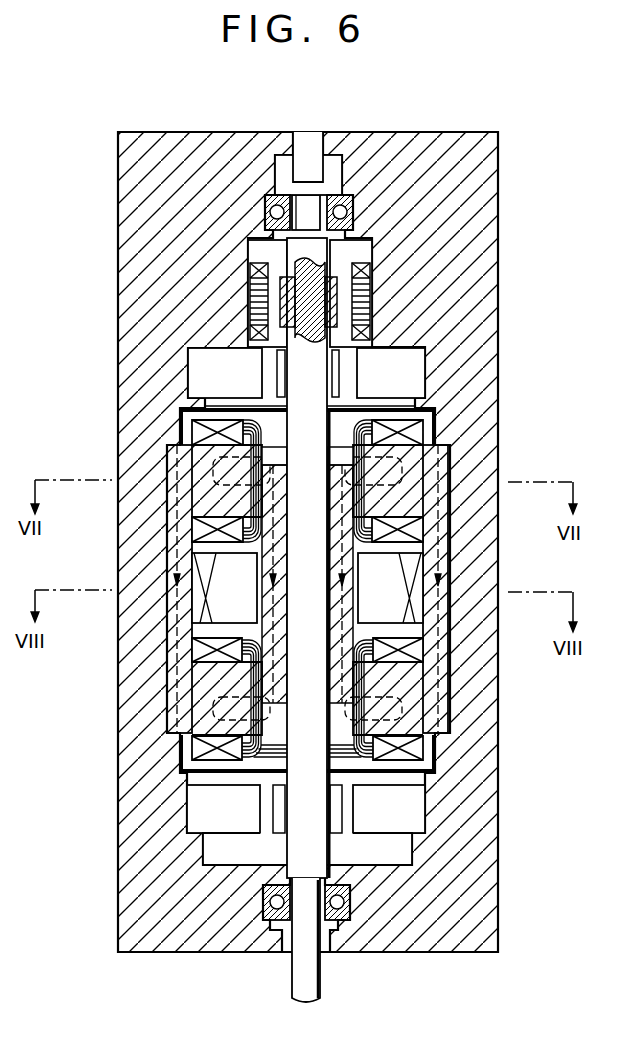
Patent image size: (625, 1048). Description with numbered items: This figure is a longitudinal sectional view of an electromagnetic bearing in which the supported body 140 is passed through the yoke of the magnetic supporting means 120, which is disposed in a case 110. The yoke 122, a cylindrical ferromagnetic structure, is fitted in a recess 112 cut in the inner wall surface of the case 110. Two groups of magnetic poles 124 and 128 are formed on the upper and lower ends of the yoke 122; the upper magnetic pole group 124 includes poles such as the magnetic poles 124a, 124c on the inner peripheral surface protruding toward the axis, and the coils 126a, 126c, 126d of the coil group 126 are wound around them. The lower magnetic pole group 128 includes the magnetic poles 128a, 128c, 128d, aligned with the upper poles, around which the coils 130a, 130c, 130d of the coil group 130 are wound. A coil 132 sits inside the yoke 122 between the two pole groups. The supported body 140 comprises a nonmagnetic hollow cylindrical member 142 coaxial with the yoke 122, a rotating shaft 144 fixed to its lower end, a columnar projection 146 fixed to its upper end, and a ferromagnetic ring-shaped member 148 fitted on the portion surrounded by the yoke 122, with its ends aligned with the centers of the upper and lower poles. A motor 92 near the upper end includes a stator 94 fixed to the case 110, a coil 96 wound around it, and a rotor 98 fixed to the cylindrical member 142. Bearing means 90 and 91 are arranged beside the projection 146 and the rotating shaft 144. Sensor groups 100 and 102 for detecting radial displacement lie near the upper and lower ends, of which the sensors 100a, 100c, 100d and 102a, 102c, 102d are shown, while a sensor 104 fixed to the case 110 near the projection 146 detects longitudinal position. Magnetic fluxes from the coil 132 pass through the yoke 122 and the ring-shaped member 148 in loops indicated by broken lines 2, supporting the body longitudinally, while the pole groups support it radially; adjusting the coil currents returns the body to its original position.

The broken lines 2 is at (326, 528).
The bearing means 90 is at (267, 196).
The bearing means 91 is at (270, 930).
The motor 92 is at (372, 285).
The stator 94 is at (364, 292).
The coil 96 is at (250, 290).
The rotor 98 is at (268, 290).
The sensor group 100 is at (371, 353).
The sensor 100a is at (208, 365).
The sensor 100c is at (415, 362).
The sensor 100d is at (337, 367).
The sensor group 102 is at (312, 822).
The sensor 102a is at (193, 823).
The sensor 102c is at (417, 817).
The sensor 102d is at (280, 822).
The sensor 104 is at (313, 135).
The case 110 is at (486, 670).
The recess 112 is at (447, 528).
The magnetic supporting means 120 is at (311, 589).
The yoke 122 is at (177, 623).
The magnetic pole group 124 is at (192, 433).
The magnetic pole 124a is at (190, 468).
The magnetic pole 124c is at (425, 462).
The coil group 126 is at (313, 460).
The coil 126a is at (180, 430).
The coil 126c is at (437, 428).
The coil 126d is at (428, 408).
The magnetic pole group 128 is at (246, 700).
The magnetic pole 128a is at (232, 685).
The magnetic pole 128c is at (420, 705).
The magnetic pole 128d is at (186, 737).
The coil group 130 is at (312, 771).
The coil 130a is at (183, 770).
The coil 130c is at (420, 754).
The coil 130d is at (253, 775).
The coil 132 is at (208, 594).
The supported body 140 is at (437, 826).
The hollow cylindrical member 142 is at (327, 852).
The rotating shaft 144 is at (316, 975).
The columnar projection 146 is at (312, 211).
The ring-shaped member 148 is at (348, 594).